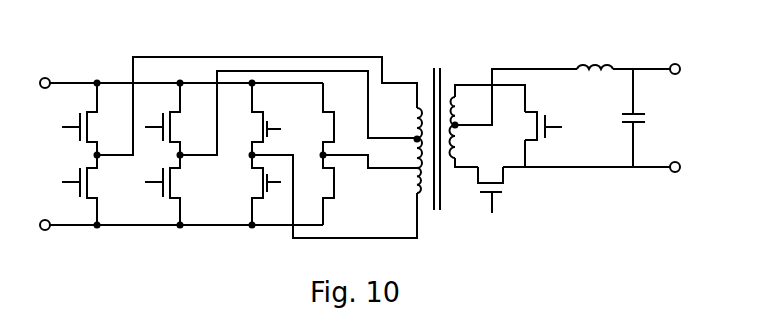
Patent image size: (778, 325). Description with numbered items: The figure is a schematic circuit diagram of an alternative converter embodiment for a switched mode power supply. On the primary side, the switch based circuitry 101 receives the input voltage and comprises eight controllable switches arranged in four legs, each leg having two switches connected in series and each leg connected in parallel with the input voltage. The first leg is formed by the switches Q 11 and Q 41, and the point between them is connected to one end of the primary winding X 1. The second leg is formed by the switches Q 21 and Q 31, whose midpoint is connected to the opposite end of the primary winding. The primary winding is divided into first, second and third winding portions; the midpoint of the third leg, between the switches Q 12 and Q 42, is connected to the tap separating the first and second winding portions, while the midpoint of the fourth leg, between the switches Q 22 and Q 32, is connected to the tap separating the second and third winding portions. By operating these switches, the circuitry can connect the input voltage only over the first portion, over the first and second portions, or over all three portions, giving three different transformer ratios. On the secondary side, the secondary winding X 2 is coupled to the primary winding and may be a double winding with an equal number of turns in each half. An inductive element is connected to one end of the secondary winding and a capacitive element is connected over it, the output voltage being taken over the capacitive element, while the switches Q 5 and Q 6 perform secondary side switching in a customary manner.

The switch based circuitry 101 is at (368, 167).
The controllable switch Q11 11 is at (96, 119).
The controllable switch Q12 12 is at (180, 119).
The controllable switch Q21 21 is at (249, 119).
The controllable switch Q22 22 is at (311, 119).
The controllable switch Q31 31 is at (249, 190).
The controllable switch Q32 32 is at (315, 190).
The controllable switch Q41 41 is at (96, 190).
The controllable switch Q42 42 is at (180, 190).
The switch Q5 5 is at (503, 196).
The switch Q6 6 is at (552, 137).
The primary winding X1 1 is at (422, 58).
The secondary winding X2 2 is at (453, 58).